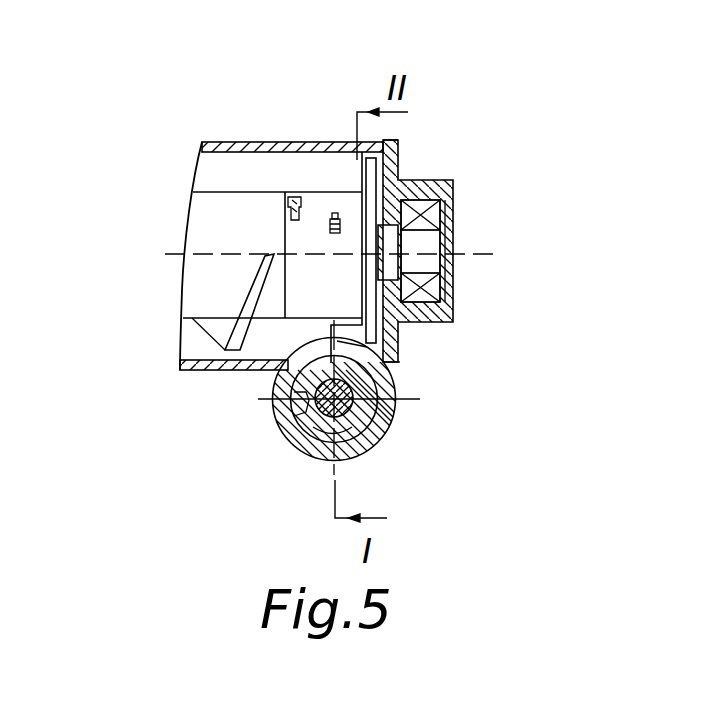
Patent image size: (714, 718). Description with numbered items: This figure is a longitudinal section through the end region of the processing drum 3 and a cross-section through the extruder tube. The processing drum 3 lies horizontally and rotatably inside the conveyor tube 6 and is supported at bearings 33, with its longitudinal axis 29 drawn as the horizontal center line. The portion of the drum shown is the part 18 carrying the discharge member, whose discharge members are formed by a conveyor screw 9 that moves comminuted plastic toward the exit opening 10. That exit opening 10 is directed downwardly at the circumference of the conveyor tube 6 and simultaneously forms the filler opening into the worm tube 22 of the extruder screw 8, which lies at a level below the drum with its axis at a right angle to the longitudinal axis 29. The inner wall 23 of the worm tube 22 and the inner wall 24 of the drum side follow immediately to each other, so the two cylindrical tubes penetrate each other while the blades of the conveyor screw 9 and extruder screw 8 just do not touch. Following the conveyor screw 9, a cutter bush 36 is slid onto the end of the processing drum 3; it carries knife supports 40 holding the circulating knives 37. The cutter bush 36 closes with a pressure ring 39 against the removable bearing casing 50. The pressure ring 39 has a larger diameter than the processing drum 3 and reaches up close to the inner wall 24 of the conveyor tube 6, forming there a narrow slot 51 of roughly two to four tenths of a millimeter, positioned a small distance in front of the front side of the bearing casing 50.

The processing drum 3 is at (418, 243).
The conveyor tube 6 is at (240, 148).
The extruder screw 8 is at (393, 388).
The conveyor screw 9 is at (268, 258).
The exit opening 10 is at (380, 357).
The part carrying the discharge member 18 is at (203, 285).
The worm tube 22 is at (375, 437).
The inner wall of the worm tube 23 is at (287, 418).
The inner wall 24 is at (300, 392).
The longitudinal axis of the processing drum 29 is at (213, 255).
The bearings 33 is at (433, 212).
The cutter bush 36 is at (323, 203).
The circulating knives 37 is at (285, 197).
The pressure ring 39 is at (373, 223).
The knife supports 40 is at (297, 197).
The bearing casing 50 is at (398, 158).
The narrow slot 51 is at (384, 145).